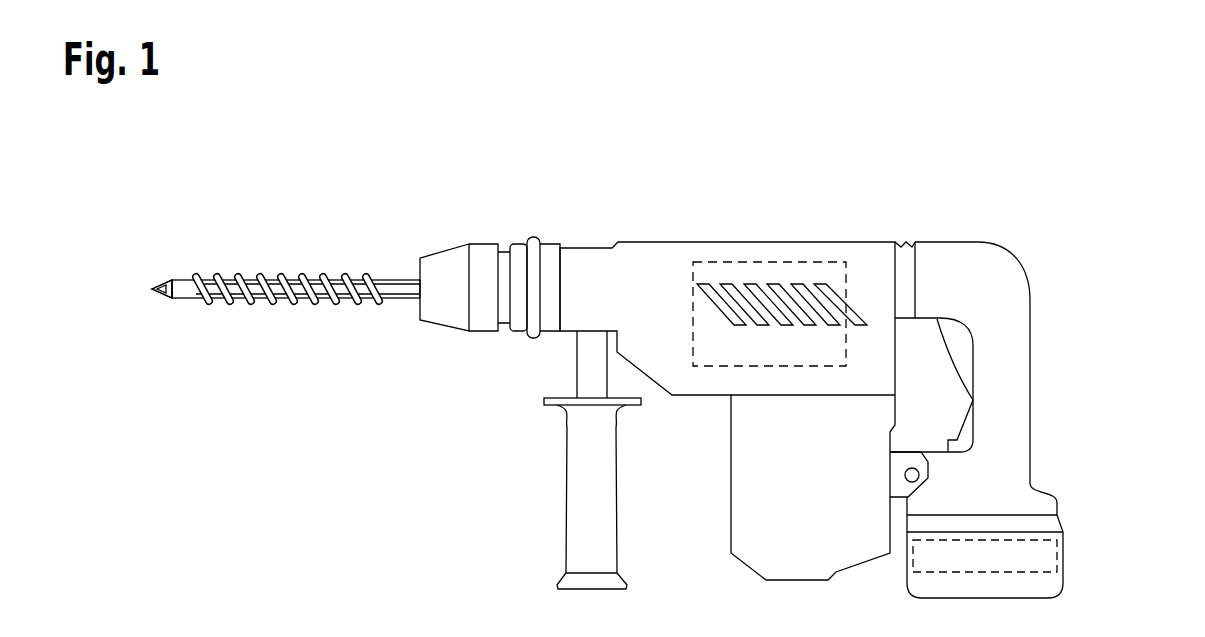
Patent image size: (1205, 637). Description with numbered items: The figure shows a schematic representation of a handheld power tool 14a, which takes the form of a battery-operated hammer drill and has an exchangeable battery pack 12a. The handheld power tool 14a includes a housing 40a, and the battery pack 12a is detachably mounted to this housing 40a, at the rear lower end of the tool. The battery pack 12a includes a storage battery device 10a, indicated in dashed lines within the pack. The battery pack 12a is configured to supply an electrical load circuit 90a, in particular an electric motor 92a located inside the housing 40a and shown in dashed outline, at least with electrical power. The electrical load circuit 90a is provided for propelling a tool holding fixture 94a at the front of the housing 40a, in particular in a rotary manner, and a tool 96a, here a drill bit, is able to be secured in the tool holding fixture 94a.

The storage battery device 10a is at (1045, 555).
The battery pack 12a is at (668, 364).
The handheld power tool 14a is at (828, 220).
The housing 40a is at (873, 272).
The electrical load circuit 90a is at (780, 270).
The electric motor 92a is at (752, 272).
The tool holding fixture 94a is at (407, 256).
The tool 96a is at (162, 298).